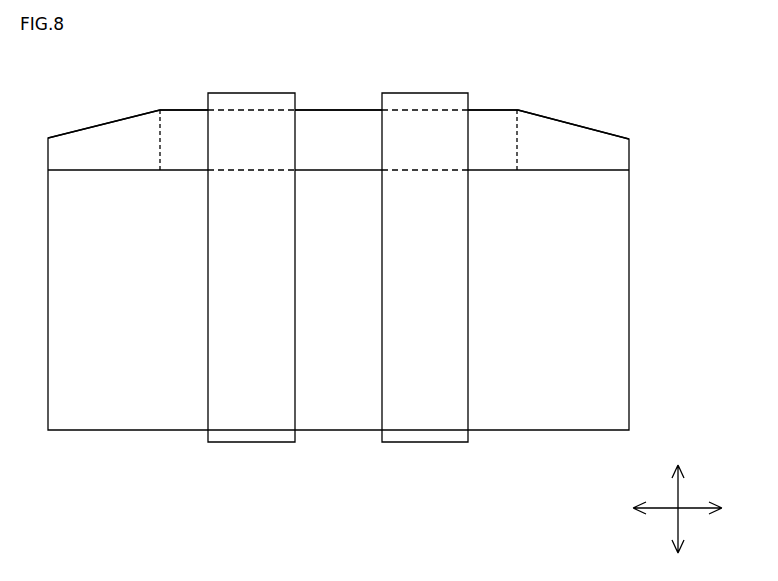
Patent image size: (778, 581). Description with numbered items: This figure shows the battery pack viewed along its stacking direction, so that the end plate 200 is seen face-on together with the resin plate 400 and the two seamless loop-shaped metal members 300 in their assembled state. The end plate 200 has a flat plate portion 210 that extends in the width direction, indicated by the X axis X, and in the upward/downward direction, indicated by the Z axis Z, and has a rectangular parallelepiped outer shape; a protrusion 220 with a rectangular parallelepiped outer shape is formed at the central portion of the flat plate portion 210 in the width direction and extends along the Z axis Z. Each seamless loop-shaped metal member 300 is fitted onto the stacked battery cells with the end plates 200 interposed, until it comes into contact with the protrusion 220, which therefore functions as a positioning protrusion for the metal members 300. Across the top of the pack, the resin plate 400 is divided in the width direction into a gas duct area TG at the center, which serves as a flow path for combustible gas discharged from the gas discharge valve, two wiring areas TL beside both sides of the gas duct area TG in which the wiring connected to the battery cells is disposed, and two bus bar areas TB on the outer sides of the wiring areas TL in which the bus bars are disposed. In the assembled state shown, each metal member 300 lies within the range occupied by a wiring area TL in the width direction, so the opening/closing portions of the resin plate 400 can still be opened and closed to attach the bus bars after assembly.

The end plate 200 is at (553, 422).
The flat plate portion 210 is at (511, 403).
The protrusion 220 is at (340, 407).
The seamless loop-shaped metal member 300 is at (250, 433).
The resin plate 400 is at (489, 122).
The bus bar area TB is at (120, 116).
The wiring area TL is at (184, 109).
The gas duct area TG is at (338, 108).
The Z axis Z is at (680, 495).
The X axis X is at (692, 505).